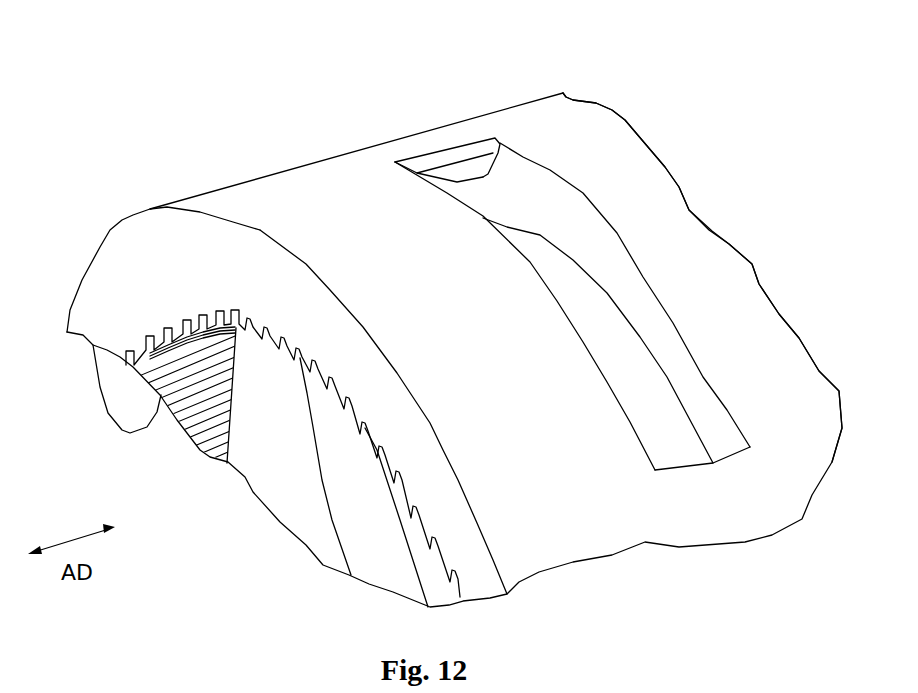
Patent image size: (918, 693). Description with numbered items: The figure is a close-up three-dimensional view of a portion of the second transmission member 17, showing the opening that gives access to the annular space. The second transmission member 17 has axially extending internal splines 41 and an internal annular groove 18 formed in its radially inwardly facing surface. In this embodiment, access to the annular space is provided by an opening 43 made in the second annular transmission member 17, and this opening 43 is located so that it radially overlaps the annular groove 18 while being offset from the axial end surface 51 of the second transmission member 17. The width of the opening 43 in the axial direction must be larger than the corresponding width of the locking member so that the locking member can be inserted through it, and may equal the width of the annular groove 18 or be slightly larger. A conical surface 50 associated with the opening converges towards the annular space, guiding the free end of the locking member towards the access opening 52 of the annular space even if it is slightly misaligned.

The second transmission member 17 is at (702, 242).
The internal annular groove 18 is at (454, 324).
The axially extending internal splines 41 is at (249, 310).
The opening 43 is at (616, 246).
The conical surface 50 is at (431, 100).
The axial end surface 51 is at (361, 246).
The access opening 52 is at (450, 107).